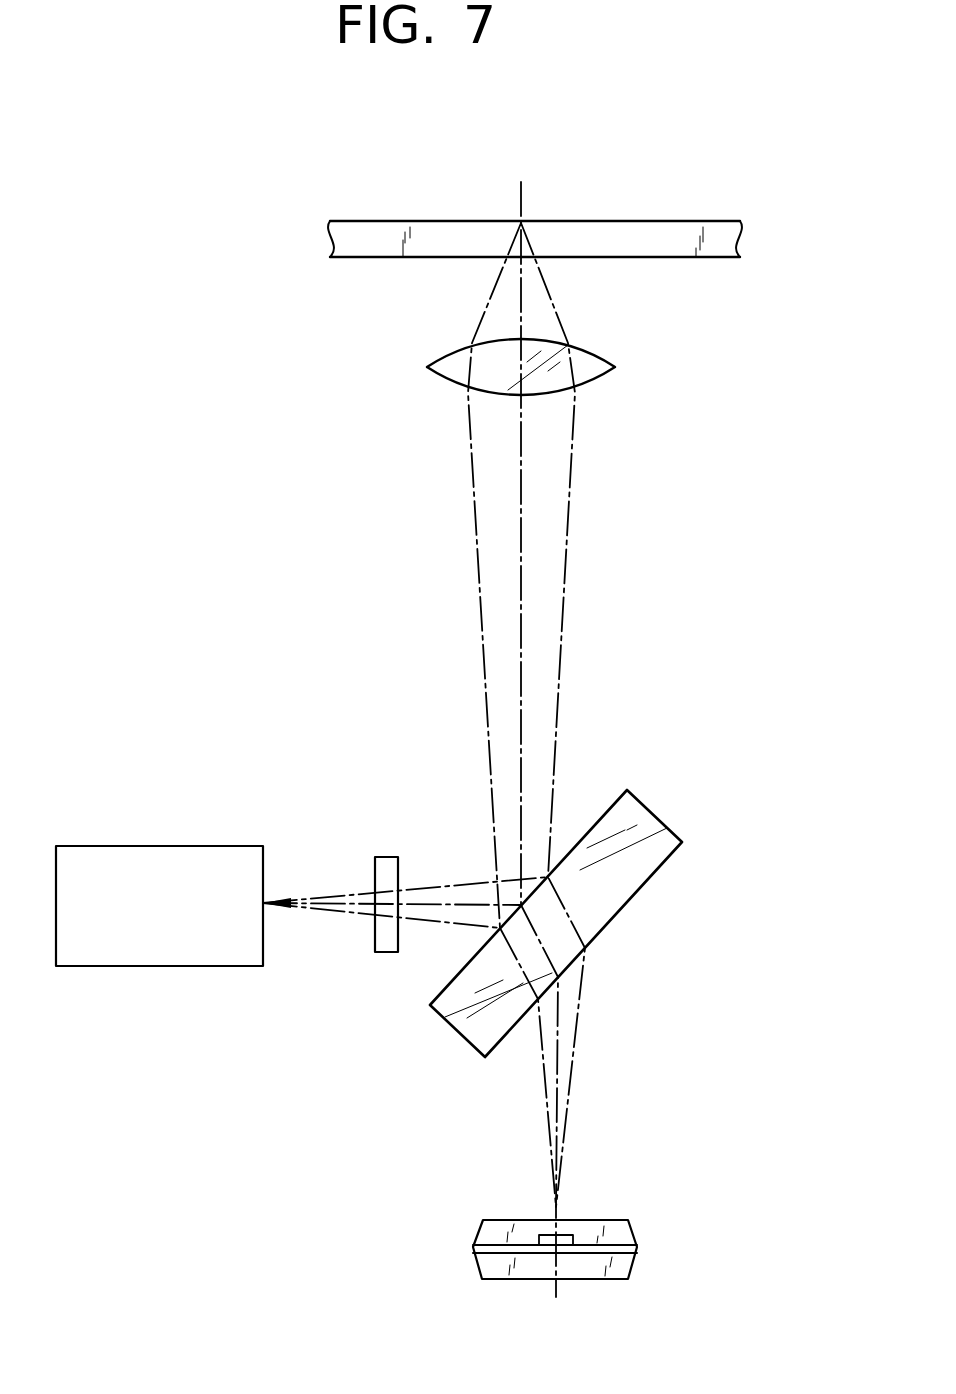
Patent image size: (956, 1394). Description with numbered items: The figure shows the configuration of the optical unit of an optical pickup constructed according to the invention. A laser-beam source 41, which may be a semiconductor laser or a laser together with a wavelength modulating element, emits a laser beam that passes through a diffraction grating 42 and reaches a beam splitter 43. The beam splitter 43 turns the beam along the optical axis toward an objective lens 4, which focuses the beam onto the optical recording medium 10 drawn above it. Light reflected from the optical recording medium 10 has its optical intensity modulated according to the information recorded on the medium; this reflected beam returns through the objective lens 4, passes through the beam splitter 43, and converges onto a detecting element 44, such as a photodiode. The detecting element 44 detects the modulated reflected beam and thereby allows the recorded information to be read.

The optical recording medium 10 is at (655, 221).
The objective lens 4 is at (615, 360).
The laser-beam source 41 is at (188, 968).
The diffraction grating 42 is at (388, 855).
The beam splitter 43 is at (637, 895).
The detecting element 44 is at (637, 1232).